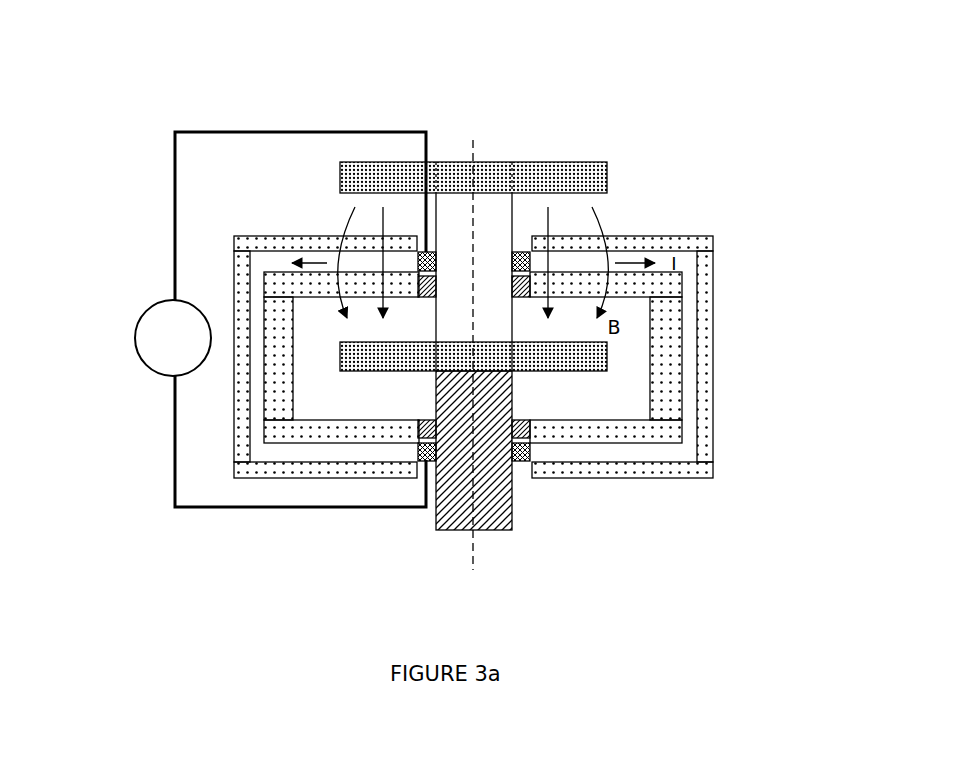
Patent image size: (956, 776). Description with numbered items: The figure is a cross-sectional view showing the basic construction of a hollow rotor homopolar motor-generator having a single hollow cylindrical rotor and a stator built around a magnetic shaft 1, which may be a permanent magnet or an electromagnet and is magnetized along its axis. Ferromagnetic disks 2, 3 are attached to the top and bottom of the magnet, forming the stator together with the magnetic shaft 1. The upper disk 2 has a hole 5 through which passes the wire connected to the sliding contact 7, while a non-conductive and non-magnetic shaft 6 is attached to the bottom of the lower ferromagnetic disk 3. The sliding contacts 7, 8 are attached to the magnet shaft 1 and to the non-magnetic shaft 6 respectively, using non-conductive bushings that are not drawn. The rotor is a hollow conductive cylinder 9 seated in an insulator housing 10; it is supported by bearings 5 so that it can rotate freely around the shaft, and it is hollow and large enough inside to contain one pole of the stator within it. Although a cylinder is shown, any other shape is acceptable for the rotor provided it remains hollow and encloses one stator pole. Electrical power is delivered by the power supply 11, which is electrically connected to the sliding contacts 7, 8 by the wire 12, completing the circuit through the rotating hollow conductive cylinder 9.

The magnetic shaft 1 is at (494, 226).
The upper ferromagnetic disk 2 is at (357, 173).
The lower ferromagnetic disk 3 is at (340, 360).
The bearing 5 is at (530, 288).
The non-magnetic shaft 6 is at (492, 500).
The sliding contact 7 is at (530, 255).
The sliding contact 8 is at (419, 460).
The hollow conductive cylinder 9 is at (688, 386).
The insulator housing 10 is at (708, 430).
The power supply 11 is at (144, 314).
The wire 12 is at (173, 220).